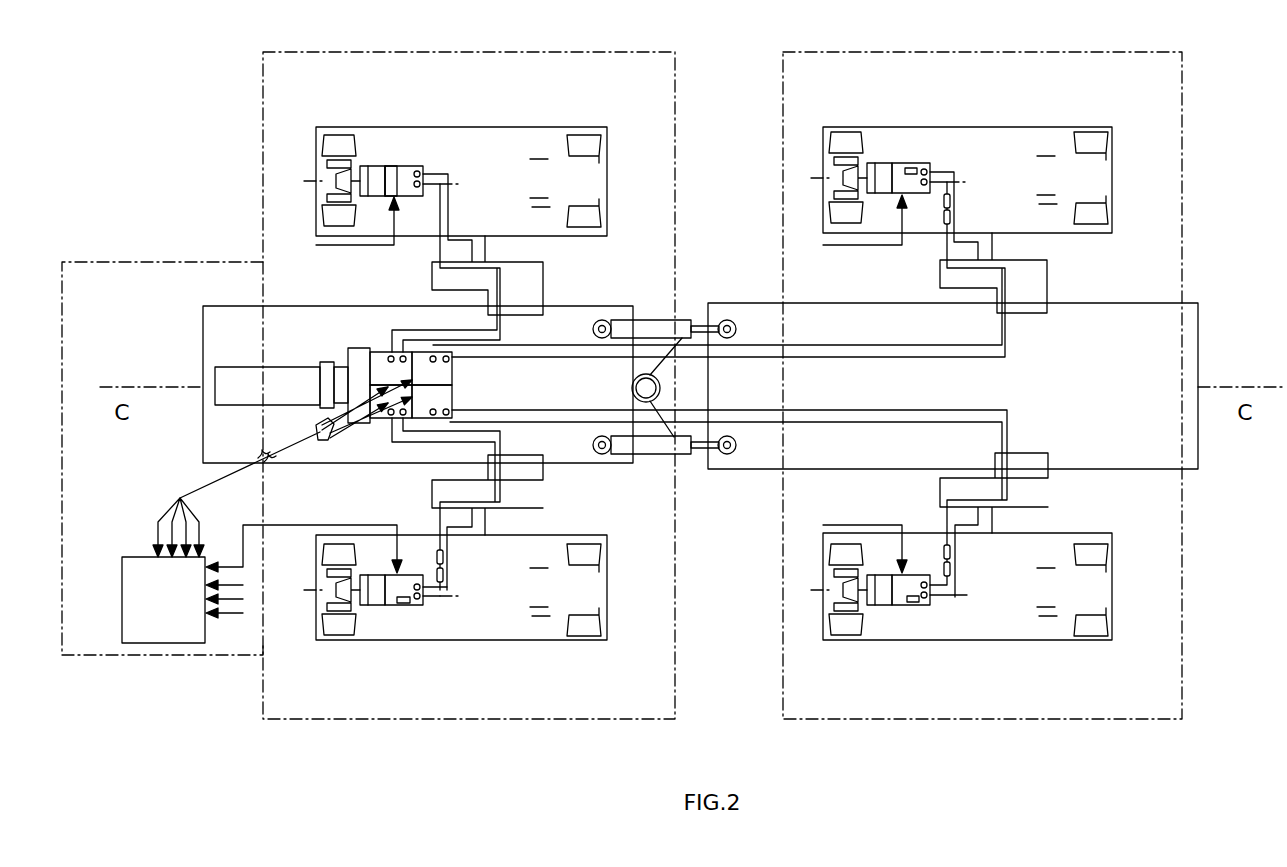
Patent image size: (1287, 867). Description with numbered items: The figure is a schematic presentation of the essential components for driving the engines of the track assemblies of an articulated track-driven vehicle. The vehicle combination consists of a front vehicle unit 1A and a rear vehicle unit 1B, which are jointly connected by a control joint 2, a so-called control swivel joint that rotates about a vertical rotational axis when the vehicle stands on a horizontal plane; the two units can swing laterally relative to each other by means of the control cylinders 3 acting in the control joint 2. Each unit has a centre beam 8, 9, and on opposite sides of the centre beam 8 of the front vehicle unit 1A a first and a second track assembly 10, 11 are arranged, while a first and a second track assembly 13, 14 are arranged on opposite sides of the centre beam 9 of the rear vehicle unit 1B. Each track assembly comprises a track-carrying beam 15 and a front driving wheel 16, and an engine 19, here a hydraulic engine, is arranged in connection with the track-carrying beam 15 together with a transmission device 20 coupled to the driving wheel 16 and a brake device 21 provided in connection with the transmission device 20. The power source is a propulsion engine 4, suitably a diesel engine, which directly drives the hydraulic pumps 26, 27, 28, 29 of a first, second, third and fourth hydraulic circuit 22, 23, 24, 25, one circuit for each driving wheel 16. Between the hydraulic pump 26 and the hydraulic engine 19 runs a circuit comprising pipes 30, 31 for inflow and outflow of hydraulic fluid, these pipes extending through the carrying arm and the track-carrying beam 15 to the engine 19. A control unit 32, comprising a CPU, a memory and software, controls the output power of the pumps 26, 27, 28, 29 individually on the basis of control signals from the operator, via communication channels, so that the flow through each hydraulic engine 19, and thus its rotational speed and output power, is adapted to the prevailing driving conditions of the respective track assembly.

The front vehicle unit 1A is at (469, 366).
The rear vehicle unit 1B is at (982, 366).
The control joint 2 is at (650, 400).
The control cylinders 3 is at (656, 322).
The propulsion engine 4 is at (260, 380).
The centre beam 8 is at (201, 444).
The centre beam 9 is at (1200, 363).
The first track assembly 10 is at (574, 641).
The second track assembly 11 is at (570, 127).
The first track assembly 13 is at (1006, 641).
The second track assembly 14 is at (1041, 127).
The track-carrying beam 15 is at (817, 384).
The front driving wheel 16 is at (350, 130).
The engine 19 is at (417, 168).
The transmission device 20 is at (359, 165).
The brake device 21 is at (384, 166).
The first hydraulic circuit 22 is at (587, 506).
The second hydraulic circuit 23 is at (586, 287).
The third hydraulic circuit 24 is at (1085, 500).
The fourth hydraulic circuit 25 is at (1089, 279).
The hydraulic pump 26 is at (392, 419).
The hydraulic pump 27 is at (387, 372).
The hydraulic pump 28 is at (422, 404).
The hydraulic pump 29 is at (425, 372).
The pipe 30 is at (428, 602).
The pipe 31 is at (438, 592).
The control unit 32 is at (122, 584).